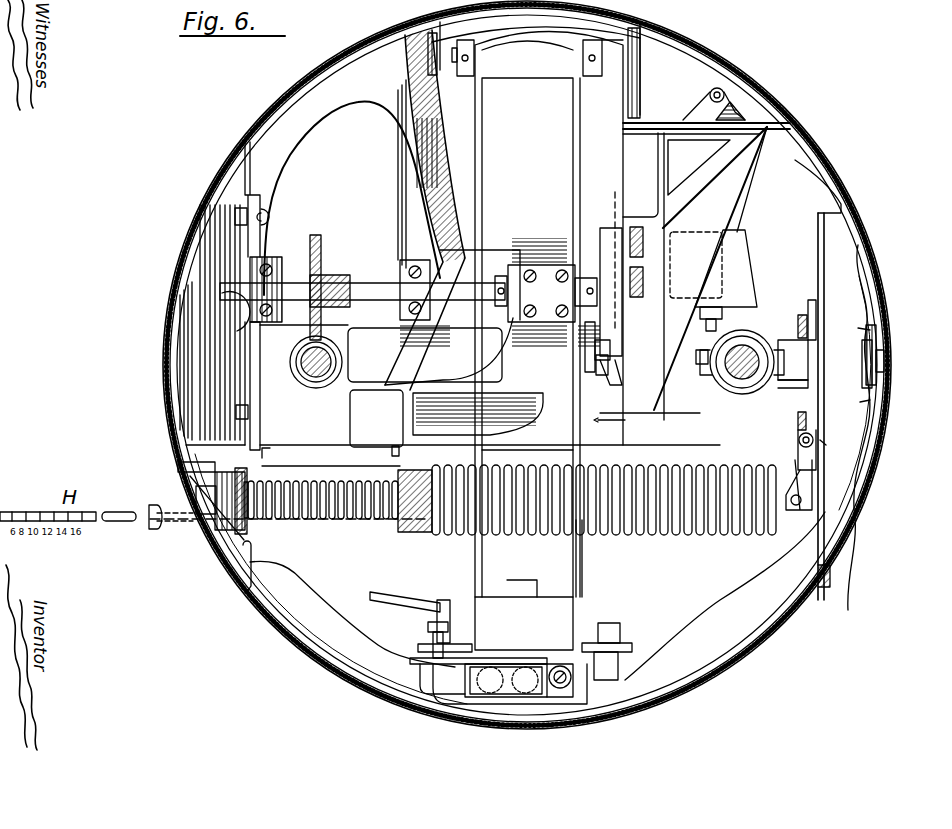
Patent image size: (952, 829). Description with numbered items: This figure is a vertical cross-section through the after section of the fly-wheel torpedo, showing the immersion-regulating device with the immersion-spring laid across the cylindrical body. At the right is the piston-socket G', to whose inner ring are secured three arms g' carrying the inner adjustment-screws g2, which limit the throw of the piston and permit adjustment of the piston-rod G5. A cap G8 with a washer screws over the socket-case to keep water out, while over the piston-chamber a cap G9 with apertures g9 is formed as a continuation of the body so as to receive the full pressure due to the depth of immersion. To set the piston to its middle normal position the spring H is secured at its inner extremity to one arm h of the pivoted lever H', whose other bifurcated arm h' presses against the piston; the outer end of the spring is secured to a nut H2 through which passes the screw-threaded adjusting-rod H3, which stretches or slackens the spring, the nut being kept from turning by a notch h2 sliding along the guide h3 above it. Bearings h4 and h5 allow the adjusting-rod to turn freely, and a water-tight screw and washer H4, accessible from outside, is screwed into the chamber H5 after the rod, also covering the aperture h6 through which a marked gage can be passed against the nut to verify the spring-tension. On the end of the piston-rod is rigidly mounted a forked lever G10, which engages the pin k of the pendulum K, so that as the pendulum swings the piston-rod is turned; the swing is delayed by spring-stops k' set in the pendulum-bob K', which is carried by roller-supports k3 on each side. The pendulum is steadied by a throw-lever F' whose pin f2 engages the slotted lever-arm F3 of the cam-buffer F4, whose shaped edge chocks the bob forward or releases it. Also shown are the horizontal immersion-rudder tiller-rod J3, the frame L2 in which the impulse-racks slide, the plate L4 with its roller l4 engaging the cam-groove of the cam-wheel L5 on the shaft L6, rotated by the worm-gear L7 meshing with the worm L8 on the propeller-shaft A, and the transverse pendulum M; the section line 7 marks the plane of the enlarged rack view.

The pendulum K is at (540, 315).
The pendulum-bob K' is at (498, 650).
The pendulum-pin k is at (615, 361).
The spring-stops k' is at (506, 713).
The roller-supports k3 is at (430, 628).
The frame L2 is at (696, 265).
The plate L4 is at (650, 268).
The roller l4 is at (626, 270).
The cam-wheel L5 is at (602, 230).
The shaft L6 is at (362, 287).
The worm-gear L7 is at (352, 198).
The worm L8 is at (396, 389).
The pendulum M is at (710, 268).
The horizontal immersion-rudder tiller-rod J3 is at (700, 314).
The section line 7 7 is at (614, 190).
The piston-socket G' is at (823, 380).
The piston-rod G5 is at (604, 376).
The cap G8 is at (882, 384).
The cap G9 is at (860, 440).
The forked lever G10 is at (587, 370).
The arms g' is at (815, 360).
The inner adjustment-screws g2 is at (798, 328).
The apertures g9 is at (878, 332).
The propeller-shaft A is at (744, 382).
The spring H is at (512, 485).
The pivoted lever H' is at (827, 361).
The nut H2 is at (415, 533).
The adjusting-rod H3 is at (345, 522).
The water-tight screw and washer H4 is at (212, 520).
The chamber H5 is at (200, 482).
The lever arm h is at (814, 521).
The bifurcated arm h' is at (839, 427).
The notch h2 is at (392, 452).
The guide h3 is at (331, 473).
The bearing h4 is at (258, 468).
The bearing h5 is at (745, 545).
The aperture h6 is at (255, 525).
The throw-lever F' is at (559, 558).
The lever-arm F3 is at (349, 604).
The cam-buffer F4 is at (452, 623).
The pin f2 is at (447, 600).